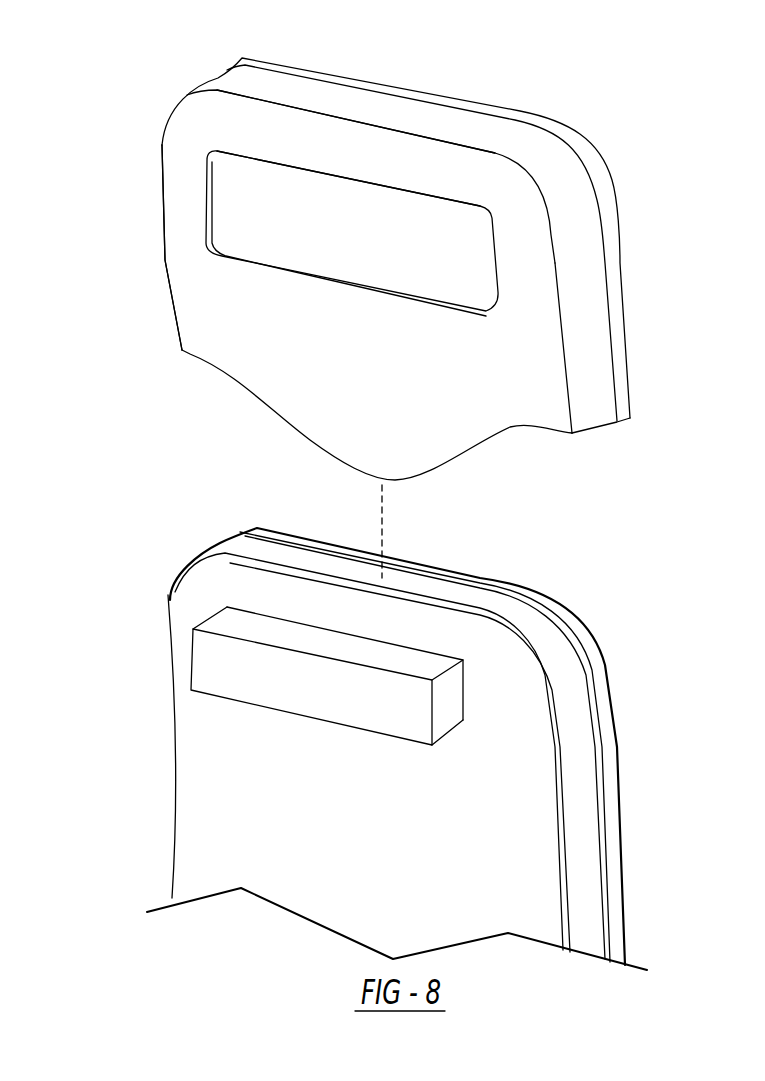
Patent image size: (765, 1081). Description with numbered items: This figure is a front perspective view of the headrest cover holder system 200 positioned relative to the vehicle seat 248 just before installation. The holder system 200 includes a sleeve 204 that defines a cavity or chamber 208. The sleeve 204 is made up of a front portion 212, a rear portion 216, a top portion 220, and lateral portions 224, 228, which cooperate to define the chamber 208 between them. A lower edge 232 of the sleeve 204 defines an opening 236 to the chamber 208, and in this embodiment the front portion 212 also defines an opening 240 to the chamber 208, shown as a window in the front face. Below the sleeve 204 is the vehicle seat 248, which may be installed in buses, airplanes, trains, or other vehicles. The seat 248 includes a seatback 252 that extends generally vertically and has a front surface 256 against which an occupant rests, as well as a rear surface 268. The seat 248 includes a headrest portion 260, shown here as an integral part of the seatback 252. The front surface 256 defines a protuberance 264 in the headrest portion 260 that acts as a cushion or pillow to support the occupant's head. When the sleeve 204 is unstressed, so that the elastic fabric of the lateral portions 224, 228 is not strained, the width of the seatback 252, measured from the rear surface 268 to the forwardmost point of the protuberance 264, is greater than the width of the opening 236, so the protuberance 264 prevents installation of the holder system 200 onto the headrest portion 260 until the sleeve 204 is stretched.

The headrest cover holder system 200 is at (572, 96).
The sleeve 204 is at (607, 246).
The cavity or chamber 208 is at (355, 247).
The front portion 212 is at (283, 340).
The rear portion 216 is at (625, 313).
The top portion 220 is at (404, 112).
The lateral portion 224 is at (598, 367).
The lateral portion 228 is at (166, 262).
The lower edge 232 is at (584, 434).
The opening 236 is at (527, 446).
The opening 240 is at (308, 170).
The vehicle seat 248 is at (627, 867).
The seatback 252 is at (176, 813).
The front surface 256 is at (288, 828).
The headrest portion 260 is at (567, 712).
The protuberance 264 is at (228, 676).
The rear surface 268 is at (620, 765).